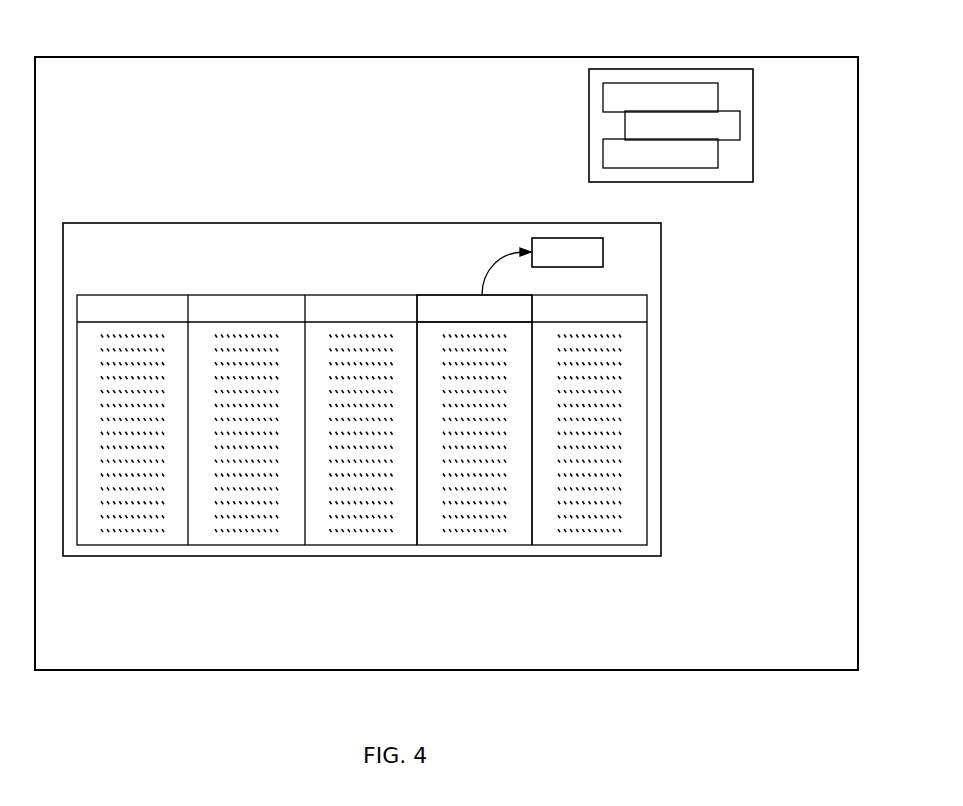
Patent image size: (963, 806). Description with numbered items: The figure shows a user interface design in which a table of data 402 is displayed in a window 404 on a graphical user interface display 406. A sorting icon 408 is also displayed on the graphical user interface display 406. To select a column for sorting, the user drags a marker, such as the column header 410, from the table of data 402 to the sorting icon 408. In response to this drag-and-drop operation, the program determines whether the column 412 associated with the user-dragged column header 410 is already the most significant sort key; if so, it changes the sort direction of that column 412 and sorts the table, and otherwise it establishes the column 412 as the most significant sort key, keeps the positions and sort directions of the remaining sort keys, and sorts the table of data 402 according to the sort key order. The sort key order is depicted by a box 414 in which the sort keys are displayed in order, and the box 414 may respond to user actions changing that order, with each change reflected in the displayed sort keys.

The table of data 402 is at (647, 401).
The window 404 is at (661, 462).
The graphical user interface display 406 is at (449, 56).
The sorting icon 408 is at (562, 238).
The column header 410 is at (462, 293).
The column 412 is at (463, 545).
The box 414 is at (753, 155).